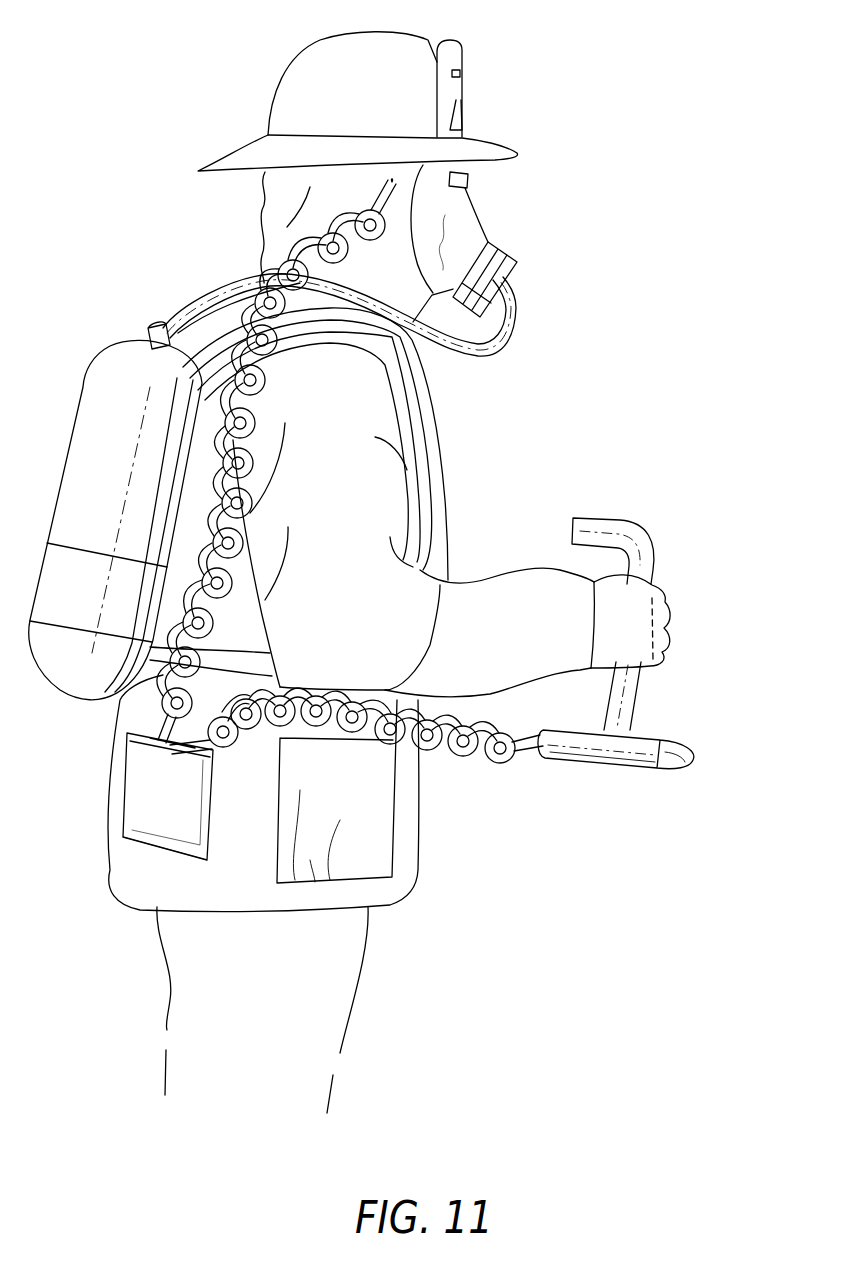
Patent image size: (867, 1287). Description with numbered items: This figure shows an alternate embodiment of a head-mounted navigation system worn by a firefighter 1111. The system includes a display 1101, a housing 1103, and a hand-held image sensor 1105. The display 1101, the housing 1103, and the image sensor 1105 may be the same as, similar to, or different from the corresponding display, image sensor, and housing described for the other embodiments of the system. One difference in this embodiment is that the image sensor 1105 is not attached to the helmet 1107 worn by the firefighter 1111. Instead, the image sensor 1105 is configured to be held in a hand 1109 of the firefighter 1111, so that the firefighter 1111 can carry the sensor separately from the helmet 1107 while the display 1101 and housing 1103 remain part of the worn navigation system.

The display 1101 is at (459, 180).
The housing 1103 is at (150, 750).
The hand-held image sensor 1105 is at (697, 760).
The helmet 1107 is at (277, 83).
The hand 1109 is at (670, 620).
The firefighter 1111 is at (200, 850).